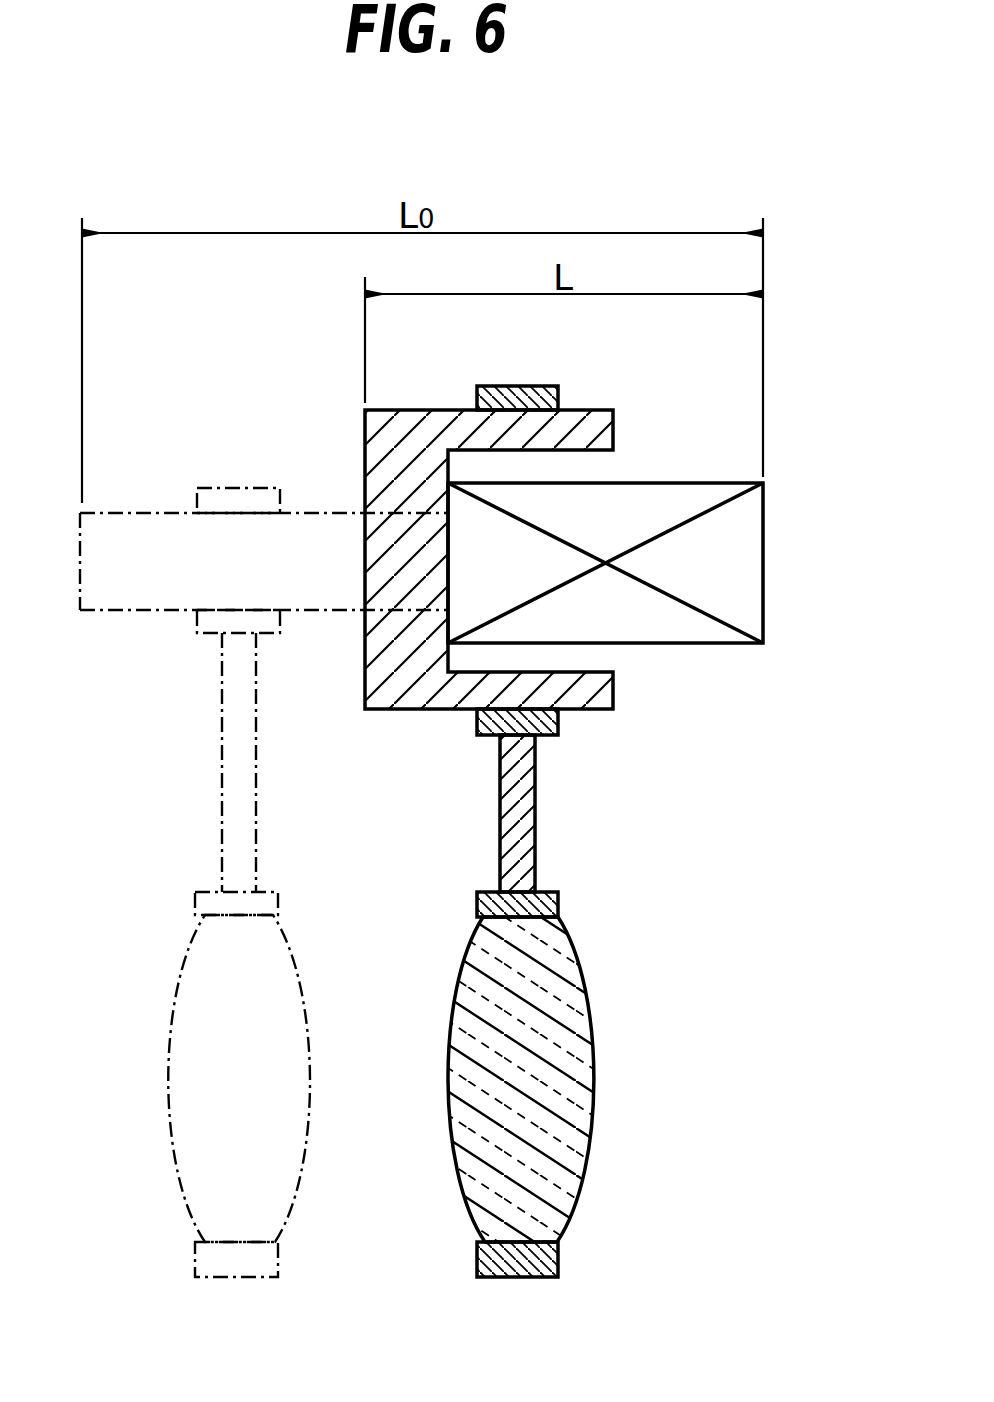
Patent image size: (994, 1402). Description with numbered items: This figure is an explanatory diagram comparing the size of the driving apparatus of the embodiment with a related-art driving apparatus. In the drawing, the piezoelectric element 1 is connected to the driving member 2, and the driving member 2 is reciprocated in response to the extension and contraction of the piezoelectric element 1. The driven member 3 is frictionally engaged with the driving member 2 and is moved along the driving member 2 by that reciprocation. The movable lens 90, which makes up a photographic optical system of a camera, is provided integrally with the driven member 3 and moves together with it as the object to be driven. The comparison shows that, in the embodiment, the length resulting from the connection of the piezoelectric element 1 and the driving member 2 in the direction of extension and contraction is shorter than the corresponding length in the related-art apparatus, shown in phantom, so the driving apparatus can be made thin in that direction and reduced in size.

The piezoelectric element 1 is at (682, 643).
The driving member 2 is at (377, 675).
The driven member 3 is at (558, 728).
The movable lens 90 is at (563, 1142).